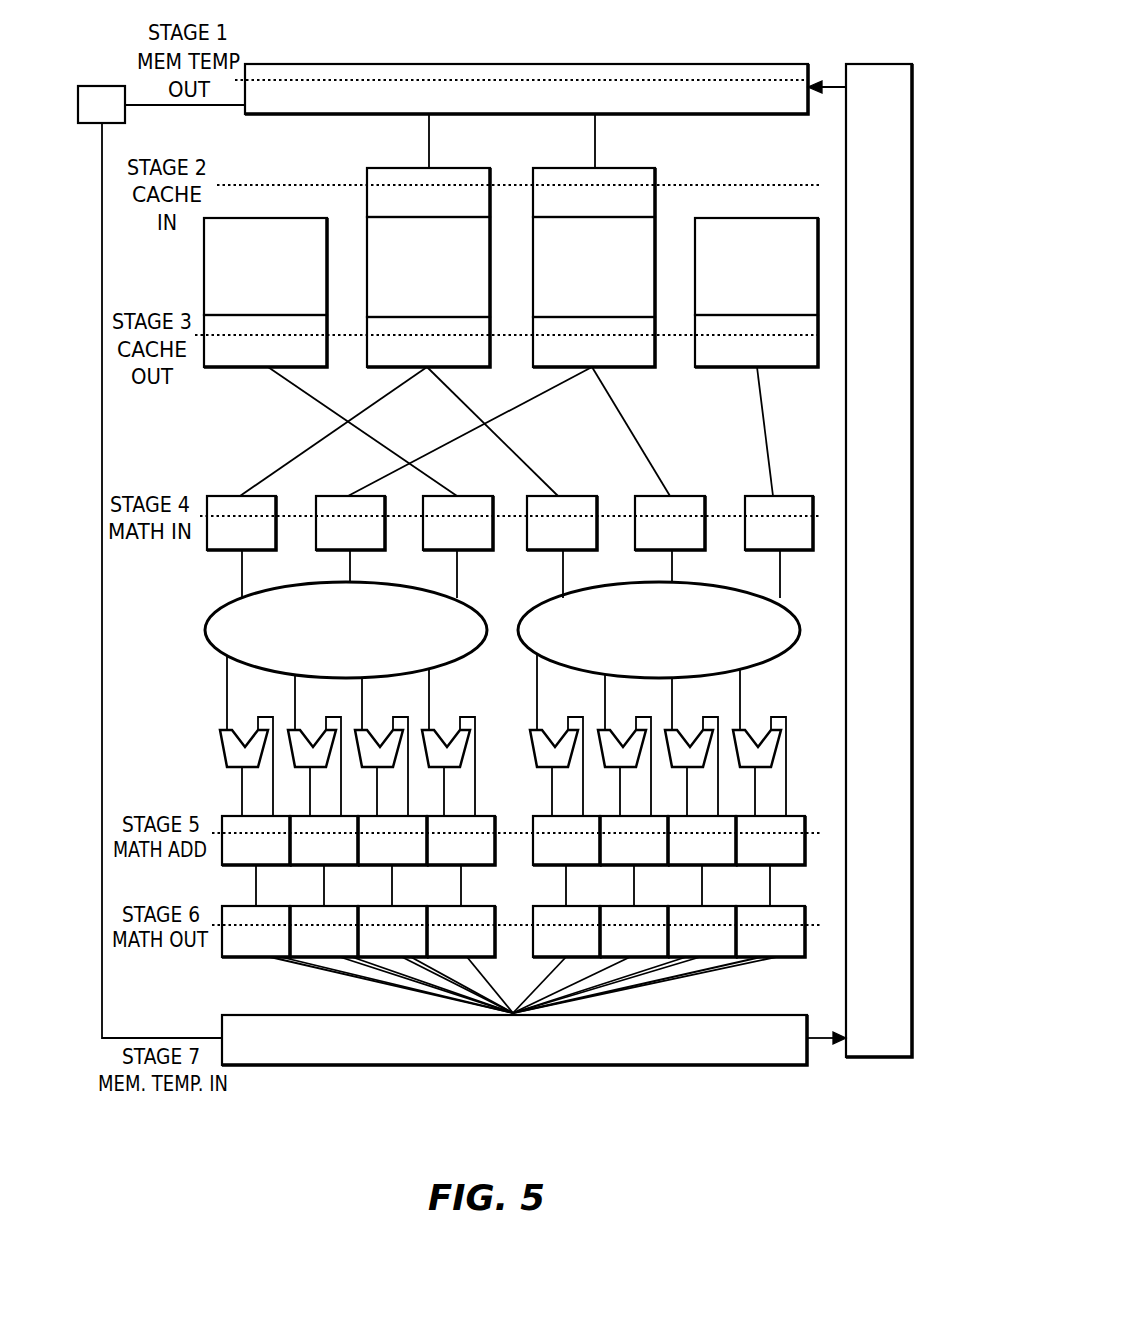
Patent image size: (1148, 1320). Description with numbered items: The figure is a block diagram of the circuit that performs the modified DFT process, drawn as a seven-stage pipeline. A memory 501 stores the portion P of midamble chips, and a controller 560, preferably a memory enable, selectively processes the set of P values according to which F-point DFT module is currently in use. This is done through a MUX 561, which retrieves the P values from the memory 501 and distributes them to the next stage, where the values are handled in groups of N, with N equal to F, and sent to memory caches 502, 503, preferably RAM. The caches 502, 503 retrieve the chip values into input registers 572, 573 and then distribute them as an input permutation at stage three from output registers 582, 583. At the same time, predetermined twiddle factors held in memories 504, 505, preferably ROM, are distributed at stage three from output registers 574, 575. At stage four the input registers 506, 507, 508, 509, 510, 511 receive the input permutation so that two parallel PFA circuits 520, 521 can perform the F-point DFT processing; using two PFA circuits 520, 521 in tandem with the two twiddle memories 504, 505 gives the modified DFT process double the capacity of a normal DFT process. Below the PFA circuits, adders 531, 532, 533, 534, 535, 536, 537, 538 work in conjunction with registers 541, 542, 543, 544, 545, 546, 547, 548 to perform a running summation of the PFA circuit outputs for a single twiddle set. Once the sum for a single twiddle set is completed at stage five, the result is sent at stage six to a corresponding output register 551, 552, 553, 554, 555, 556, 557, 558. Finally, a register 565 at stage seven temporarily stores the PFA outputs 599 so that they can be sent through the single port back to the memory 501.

The memory 501 is at (899, 643).
The controller 560 is at (121, 117).
The MUX 561 is at (518, 106).
The input register 572 is at (448, 214).
The input register 573 is at (614, 214).
The memory cache 502 is at (448, 264).
The memory cache 503 is at (614, 264).
The memory 504 is at (285, 262).
The memory 505 is at (776, 262).
The output register 574 is at (285, 362).
The output register 582 is at (448, 364).
The output register 583 is at (614, 364).
The output register 575 is at (776, 362).
The input register 506 is at (262, 544).
The input register 507 is at (370, 544).
The input register 508 is at (478, 544).
The input register 509 is at (582, 544).
The input register 510 is at (690, 544).
The input register 511 is at (799, 544).
The PFA circuit 520 is at (367, 640).
The PFA circuit 521 is at (679, 640).
The adder 531 is at (221, 742).
The adder 532 is at (294, 730).
The adder 533 is at (362, 730).
The adder 534 is at (445, 733).
The adder 535 is at (531, 742).
The adder 536 is at (604, 730).
The adder 537 is at (672, 730).
The adder 538 is at (756, 733).
The register 541 is at (276, 860).
The register 542 is at (344, 860).
The register 543 is at (412, 860).
The register 544 is at (481, 860).
The register 545 is at (586, 860).
The register 546 is at (654, 860).
The register 547 is at (722, 860).
The register 548 is at (790, 860).
The output register 551 is at (276, 950).
The output register 552 is at (344, 950).
The output register 553 is at (412, 950).
The output register 554 is at (481, 950).
The output register 555 is at (586, 950).
The output register 556 is at (654, 950).
The output register 557 is at (722, 950).
The output register 558 is at (790, 950).
The register 565 is at (537, 1047).
The PFA outputs 599 is at (818, 1045).